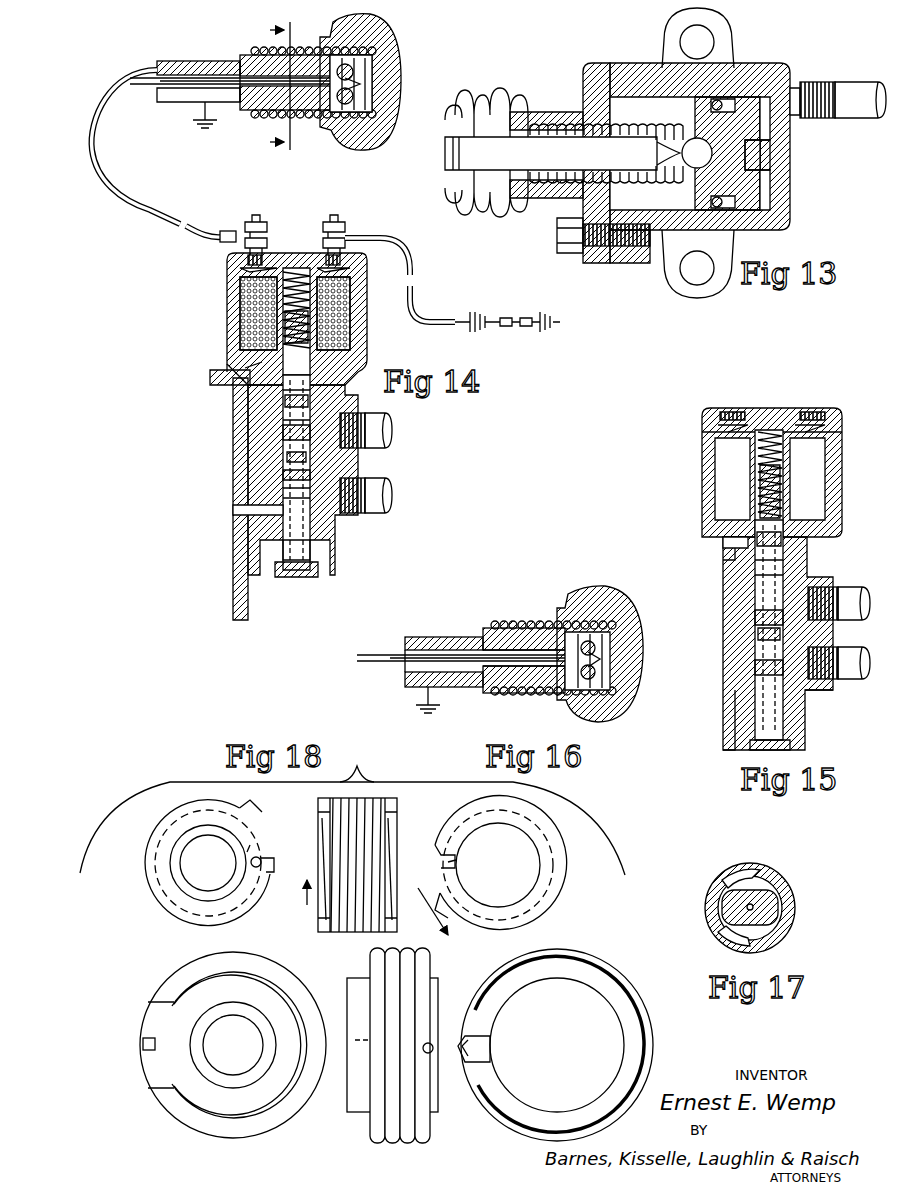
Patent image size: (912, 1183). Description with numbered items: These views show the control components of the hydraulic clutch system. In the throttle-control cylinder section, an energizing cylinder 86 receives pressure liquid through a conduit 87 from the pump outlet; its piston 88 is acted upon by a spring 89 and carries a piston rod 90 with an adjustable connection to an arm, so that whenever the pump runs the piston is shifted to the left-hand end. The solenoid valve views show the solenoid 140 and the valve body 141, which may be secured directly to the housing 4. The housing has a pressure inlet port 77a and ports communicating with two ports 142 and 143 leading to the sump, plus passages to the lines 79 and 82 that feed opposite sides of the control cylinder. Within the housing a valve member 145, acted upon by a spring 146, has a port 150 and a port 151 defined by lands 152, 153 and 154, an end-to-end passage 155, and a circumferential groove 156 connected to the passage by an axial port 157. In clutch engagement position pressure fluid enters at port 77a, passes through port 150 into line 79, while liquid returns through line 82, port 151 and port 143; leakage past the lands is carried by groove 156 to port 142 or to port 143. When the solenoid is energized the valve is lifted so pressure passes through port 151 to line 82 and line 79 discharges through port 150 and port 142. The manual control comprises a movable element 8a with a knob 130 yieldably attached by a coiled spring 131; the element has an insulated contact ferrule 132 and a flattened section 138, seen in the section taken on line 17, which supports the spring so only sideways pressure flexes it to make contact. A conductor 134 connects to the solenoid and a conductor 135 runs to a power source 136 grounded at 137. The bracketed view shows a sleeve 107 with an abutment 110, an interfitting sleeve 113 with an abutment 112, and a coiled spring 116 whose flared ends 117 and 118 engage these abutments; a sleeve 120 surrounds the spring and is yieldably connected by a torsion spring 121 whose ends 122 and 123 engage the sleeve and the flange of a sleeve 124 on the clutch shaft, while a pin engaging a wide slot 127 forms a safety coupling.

In FIG. 14, the housing 4 is at (236, 597).
In FIG. 14, the movable element 8a is at (180, 60).
In FIG. 16, the movable element 8a is at (436, 636).
In FIG. 14, the section line 17— 17 is at (270, 87).
In FIG. 14, the pressure inlet port 77a is at (287, 457).
In FIG. 15, the pressure inlet port 77a is at (760, 634).
In FIG. 14, the conduit 79 is at (384, 430).
In FIG. 15, the conduit 79 is at (845, 596).
In FIG. 14, the conduit 82 is at (382, 505).
In FIG. 15, the conduit 82 is at (850, 680).
In FIG. 13, the energizing cylinder 86 is at (635, 72).
In FIG. 13, the conduit 87 is at (840, 116).
In FIG. 13, the piston 88 is at (750, 80).
In FIG. 13, the spring 89 is at (560, 124).
In FIG. 13, the piston rod 90 is at (522, 138).
In FIG. 18, the sleeve 107 is at (160, 845).
In FIG. 18, the abutment 110 is at (322, 880).
In FIG. 18, the abutment 112 is at (396, 860).
In FIG. 18, the interfitting sleeve 113 is at (552, 870).
In FIG. 18, the coiled spring 116 is at (350, 924).
In FIG. 18, the flared spring end 117 is at (323, 866).
In FIG. 18, the flared spring end 118 is at (398, 890).
In FIG. 18, the sleeve 120 is at (243, 1110).
In FIG. 18, the torsion spring 121 is at (205, 1122).
In FIG. 18, the torsion spring end 122 is at (472, 1040).
In FIG. 18, the torsion spring end 123 is at (142, 1046).
In FIG. 18, the sleeve 124 is at (200, 1090).
In FIG. 18, the slot 127 is at (449, 848).
In FIG. 14, the handle or knob 130 is at (396, 58).
In FIG. 16, the handle or knob 130 is at (612, 590).
In FIG. 14, the coiled spring 131 is at (252, 48).
In FIG. 16, the coiled spring 131 is at (508, 620).
In FIG. 17, the coiled spring 131 is at (792, 908).
In FIG. 14, the insulated electrical contact ferrule 132 is at (355, 88).
In FIG. 16, the insulated electrical contact ferrule 132 is at (600, 672).
In FIG. 14, the electrical conductor 134 is at (148, 204).
In FIG. 16, the electrical conductor 134 is at (382, 652).
In FIG. 14, the electrical conductor 135 is at (418, 266).
In FIG. 14, the battery or source of power 136 is at (477, 315).
In FIG. 14, the ground 137 is at (537, 315).
In FIG. 14, the flattened section 138 is at (308, 112).
In FIG. 16, the flattened section 138 is at (540, 650).
In FIG. 17, the flattened section 138 is at (778, 896).
In FIG. 14, the solenoid 140 is at (240, 290).
In FIG. 15, the solenoid 140 is at (726, 455).
In FIG. 14, the valve body 141 is at (358, 395).
In FIG. 14, the sump port 142 is at (228, 385).
In FIG. 14, the sump port 143 is at (238, 510).
In FIG. 14, the valve member 145 is at (240, 312).
In FIG. 14, the spring 146 is at (297, 265).
In FIG. 15, the spring 146 is at (768, 430).
In FIG. 14, the port 150 is at (290, 433).
In FIG. 14, the port 151 is at (283, 493).
In FIG. 14, the land 152 is at (312, 408).
In FIG. 15, the land 152 is at (758, 563).
In FIG. 14, the land 153 is at (312, 476).
In FIG. 15, the land 153 is at (760, 615).
In FIG. 14, the land 154 is at (312, 548).
In FIG. 15, the land 154 is at (760, 668).
In FIG. 14, the passage 155 is at (295, 545).
In FIG. 14, the circumferential groove 156 is at (250, 368).
In FIG. 15, the circumferential groove 156 is at (728, 542).
In FIG. 14, the axial port 157 is at (290, 400).
In FIG. 15, the axial port 157 is at (762, 540).